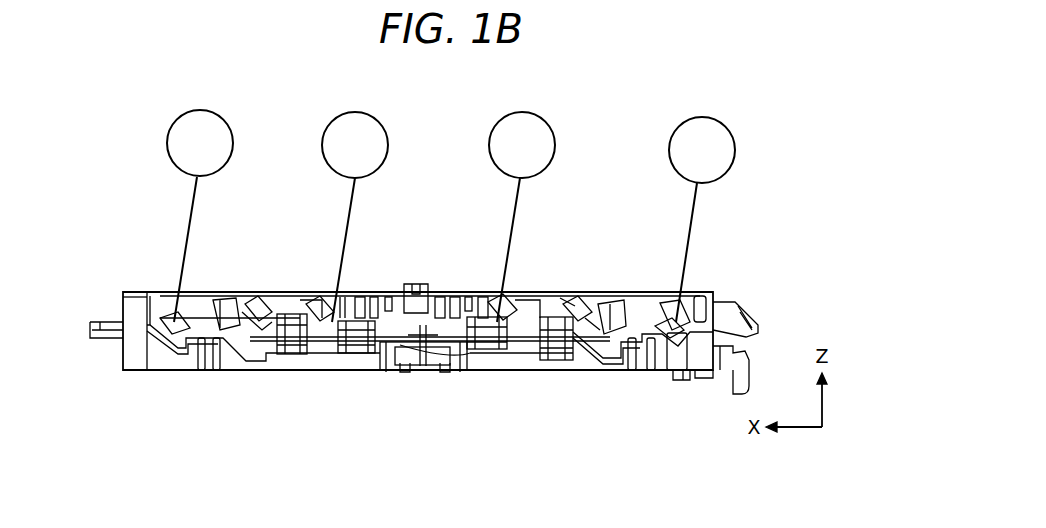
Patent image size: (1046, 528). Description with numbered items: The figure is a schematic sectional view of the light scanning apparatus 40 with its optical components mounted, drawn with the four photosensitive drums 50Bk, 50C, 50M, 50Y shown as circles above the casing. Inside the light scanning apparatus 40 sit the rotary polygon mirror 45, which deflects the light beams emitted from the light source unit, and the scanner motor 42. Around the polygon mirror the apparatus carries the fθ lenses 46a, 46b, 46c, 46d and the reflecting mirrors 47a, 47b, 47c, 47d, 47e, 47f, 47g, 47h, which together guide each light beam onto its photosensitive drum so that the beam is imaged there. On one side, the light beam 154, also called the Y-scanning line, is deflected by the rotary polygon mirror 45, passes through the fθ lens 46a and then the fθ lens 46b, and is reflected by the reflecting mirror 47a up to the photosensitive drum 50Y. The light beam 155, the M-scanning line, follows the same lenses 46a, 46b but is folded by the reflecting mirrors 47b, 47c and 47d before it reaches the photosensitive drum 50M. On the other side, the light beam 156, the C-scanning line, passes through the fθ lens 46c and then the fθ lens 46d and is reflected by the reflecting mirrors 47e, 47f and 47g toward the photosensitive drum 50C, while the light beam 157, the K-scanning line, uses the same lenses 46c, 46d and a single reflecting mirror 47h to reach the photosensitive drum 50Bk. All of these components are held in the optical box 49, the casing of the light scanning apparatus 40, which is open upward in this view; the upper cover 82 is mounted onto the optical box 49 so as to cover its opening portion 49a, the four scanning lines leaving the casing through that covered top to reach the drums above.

The light scanning apparatus 40 is at (740, 284).
The scanner motor 42 is at (400, 347).
The rotary polygon mirror 45 is at (412, 342).
The fθ lens 46a is at (470, 360).
The fθ lens 46b is at (548, 302).
The fθ lens 46c is at (350, 340).
The fθ lens 46d is at (298, 302).
The reflecting mirror 47a is at (665, 302).
The reflecting mirror 47b is at (605, 302).
The reflecting mirror 47c is at (577, 302).
The reflecting mirror 47d is at (500, 308).
The reflecting mirror 47e is at (240, 302).
The reflecting mirror 47f is at (255, 302).
The reflecting mirror 47g is at (337, 302).
The reflecting mirror 47h is at (167, 292).
The optical box 49 is at (513, 345).
The opening portion 49a is at (150, 290).
The photosensitive drum 50Bk is at (178, 137).
The photosensitive drum 50C is at (345, 135).
The photosensitive drum 50M is at (506, 133).
The photosensitive drum 50Y is at (686, 138).
The upper cover 82 is at (372, 292).
The light beam 154 is at (694, 203).
The light beam 155 is at (516, 200).
The light beam 156 is at (352, 200).
The light beam 157 is at (194, 200).